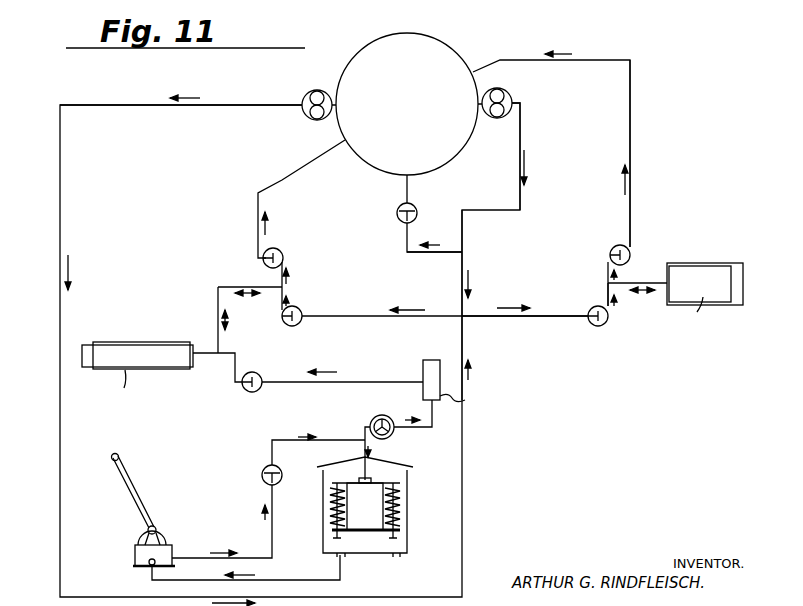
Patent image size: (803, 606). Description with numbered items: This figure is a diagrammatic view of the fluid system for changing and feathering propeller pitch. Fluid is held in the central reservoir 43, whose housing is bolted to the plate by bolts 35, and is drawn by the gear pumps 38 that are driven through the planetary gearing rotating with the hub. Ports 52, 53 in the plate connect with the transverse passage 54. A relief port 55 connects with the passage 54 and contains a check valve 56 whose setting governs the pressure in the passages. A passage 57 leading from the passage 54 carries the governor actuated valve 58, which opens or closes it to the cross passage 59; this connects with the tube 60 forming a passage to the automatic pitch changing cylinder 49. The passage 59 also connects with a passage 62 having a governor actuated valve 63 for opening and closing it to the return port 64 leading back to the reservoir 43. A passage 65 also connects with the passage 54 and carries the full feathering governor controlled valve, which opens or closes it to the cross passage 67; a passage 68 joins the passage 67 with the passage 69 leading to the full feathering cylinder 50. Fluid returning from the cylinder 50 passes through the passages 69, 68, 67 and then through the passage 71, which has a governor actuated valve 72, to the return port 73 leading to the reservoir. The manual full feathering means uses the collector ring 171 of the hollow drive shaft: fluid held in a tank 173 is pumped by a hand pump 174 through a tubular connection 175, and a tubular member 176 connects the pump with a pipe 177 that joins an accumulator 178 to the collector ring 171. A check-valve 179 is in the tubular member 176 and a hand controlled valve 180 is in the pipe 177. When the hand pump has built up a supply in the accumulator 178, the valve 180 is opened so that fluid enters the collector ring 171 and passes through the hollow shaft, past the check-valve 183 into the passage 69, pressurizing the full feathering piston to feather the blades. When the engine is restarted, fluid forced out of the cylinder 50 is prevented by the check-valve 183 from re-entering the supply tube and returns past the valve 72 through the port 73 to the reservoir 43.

The bolts 35 is at (319, 92).
The gear pumps 38 is at (506, 93).
The central reservoir 43 is at (447, 56).
The cylinder 49 is at (684, 263).
The cylinder 50 is at (165, 345).
The port 52 is at (520, 111).
The port 53 is at (246, 105).
The transverse passage 54 is at (462, 262).
The relief port 55 is at (420, 252).
The check valve 56 is at (416, 208).
The passage 57 is at (510, 318).
The governor actuated valve 58 is at (592, 326).
The cross passage 59 is at (608, 297).
The tube 60 is at (640, 283).
The passage 62 is at (630, 258).
The governor actuated valve 63 is at (610, 256).
The return port 64 is at (630, 163).
The passage 65 is at (381, 316).
The cross passage 67 is at (283, 288).
The passage 68 is at (252, 287).
The passage 69 is at (206, 353).
The passage 71 is at (264, 249).
The governor actuated valve 72 is at (283, 252).
The return port 73 is at (258, 205).
The collector ring 171 is at (432, 360).
The tank 173 is at (375, 548).
The hand pump 174 is at (175, 548).
The tubular connection 175 is at (314, 580).
The tubular member 176 is at (272, 540).
The pipe 177 is at (418, 427).
The accumulator 178 is at (375, 507).
The check-valve 179 is at (282, 469).
The hand controlled valve 180 is at (396, 405).
The check-valve 183 is at (255, 392).